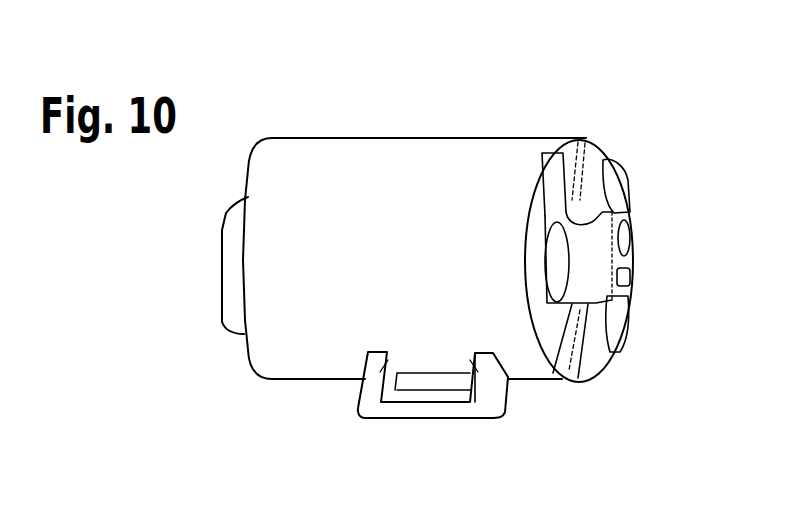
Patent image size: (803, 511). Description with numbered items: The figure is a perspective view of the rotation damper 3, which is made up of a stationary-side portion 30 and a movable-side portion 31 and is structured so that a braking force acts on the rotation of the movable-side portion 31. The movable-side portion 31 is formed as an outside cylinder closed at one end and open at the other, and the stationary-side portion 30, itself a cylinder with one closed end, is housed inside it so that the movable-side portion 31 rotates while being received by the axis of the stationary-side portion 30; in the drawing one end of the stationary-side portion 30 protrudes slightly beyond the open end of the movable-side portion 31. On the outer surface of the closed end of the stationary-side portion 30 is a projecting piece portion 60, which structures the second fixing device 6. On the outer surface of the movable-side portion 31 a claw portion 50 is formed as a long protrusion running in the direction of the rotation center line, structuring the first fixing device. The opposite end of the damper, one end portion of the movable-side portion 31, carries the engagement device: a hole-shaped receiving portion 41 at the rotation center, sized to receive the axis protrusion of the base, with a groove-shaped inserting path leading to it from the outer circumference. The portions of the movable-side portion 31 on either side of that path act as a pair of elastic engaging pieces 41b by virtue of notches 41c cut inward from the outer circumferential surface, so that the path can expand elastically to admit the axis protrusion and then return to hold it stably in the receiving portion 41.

The rotation damper 3 is at (410, 150).
The movable-side portion 31 is at (471, 150).
The stationary-side portion 30 is at (218, 257).
The second fixing device 6 is at (176, 295).
The projecting piece portion 60 is at (222, 294).
The receiving portion 41 is at (583, 270).
The elastic engaging pieces 41b is at (585, 150).
The notches 41c is at (560, 150).
The claw portion 50 is at (425, 412).